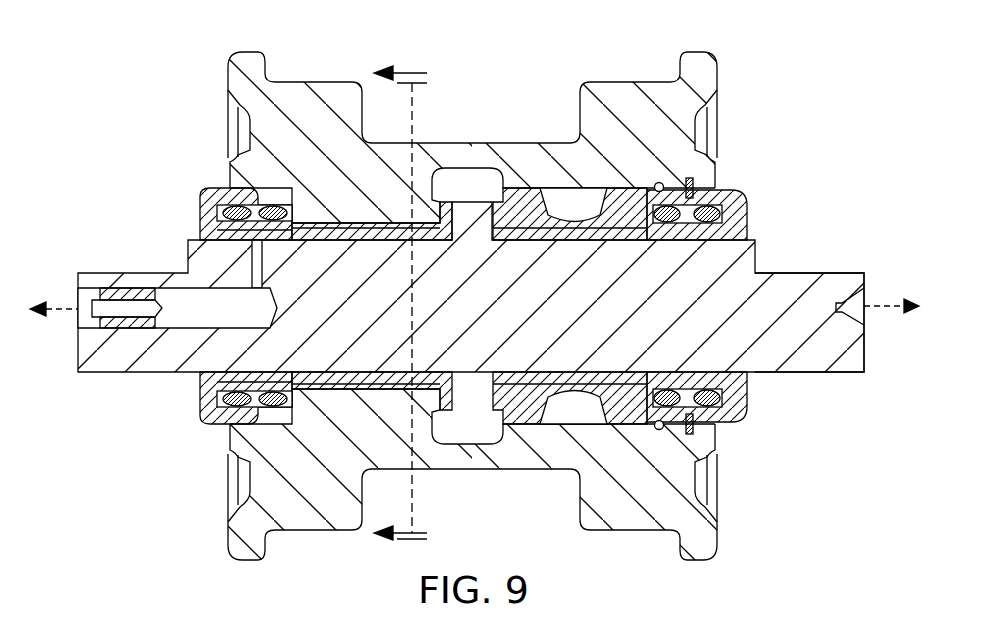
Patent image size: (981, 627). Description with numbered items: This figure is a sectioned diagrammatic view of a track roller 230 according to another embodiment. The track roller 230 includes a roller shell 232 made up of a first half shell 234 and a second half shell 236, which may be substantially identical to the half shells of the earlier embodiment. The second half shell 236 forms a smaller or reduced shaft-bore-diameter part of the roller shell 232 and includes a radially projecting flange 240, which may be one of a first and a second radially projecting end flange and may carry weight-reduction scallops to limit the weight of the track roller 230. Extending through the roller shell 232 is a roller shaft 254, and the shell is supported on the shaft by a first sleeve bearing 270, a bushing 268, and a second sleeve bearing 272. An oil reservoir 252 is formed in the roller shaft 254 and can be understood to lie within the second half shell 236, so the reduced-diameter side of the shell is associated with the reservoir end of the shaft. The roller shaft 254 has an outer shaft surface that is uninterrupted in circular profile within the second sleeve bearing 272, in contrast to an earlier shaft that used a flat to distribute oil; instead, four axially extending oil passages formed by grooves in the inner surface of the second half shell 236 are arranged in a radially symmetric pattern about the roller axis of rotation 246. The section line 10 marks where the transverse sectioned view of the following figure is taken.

The section line 10- 10 is at (413, 306).
The track roller 230 is at (490, 313).
The roller shell 232 is at (690, 543).
The first half shell 234 is at (598, 518).
The second half shell 236 is at (288, 518).
The radially projecting flange 240 is at (250, 52).
The roller axis of rotation 246 is at (882, 300).
The oil reservoir 252 is at (175, 340).
The roller shaft 254 is at (848, 365).
The bushing 268 is at (645, 412).
The first sleeve bearing 270 is at (598, 240).
The second sleeve bearing 272 is at (340, 223).